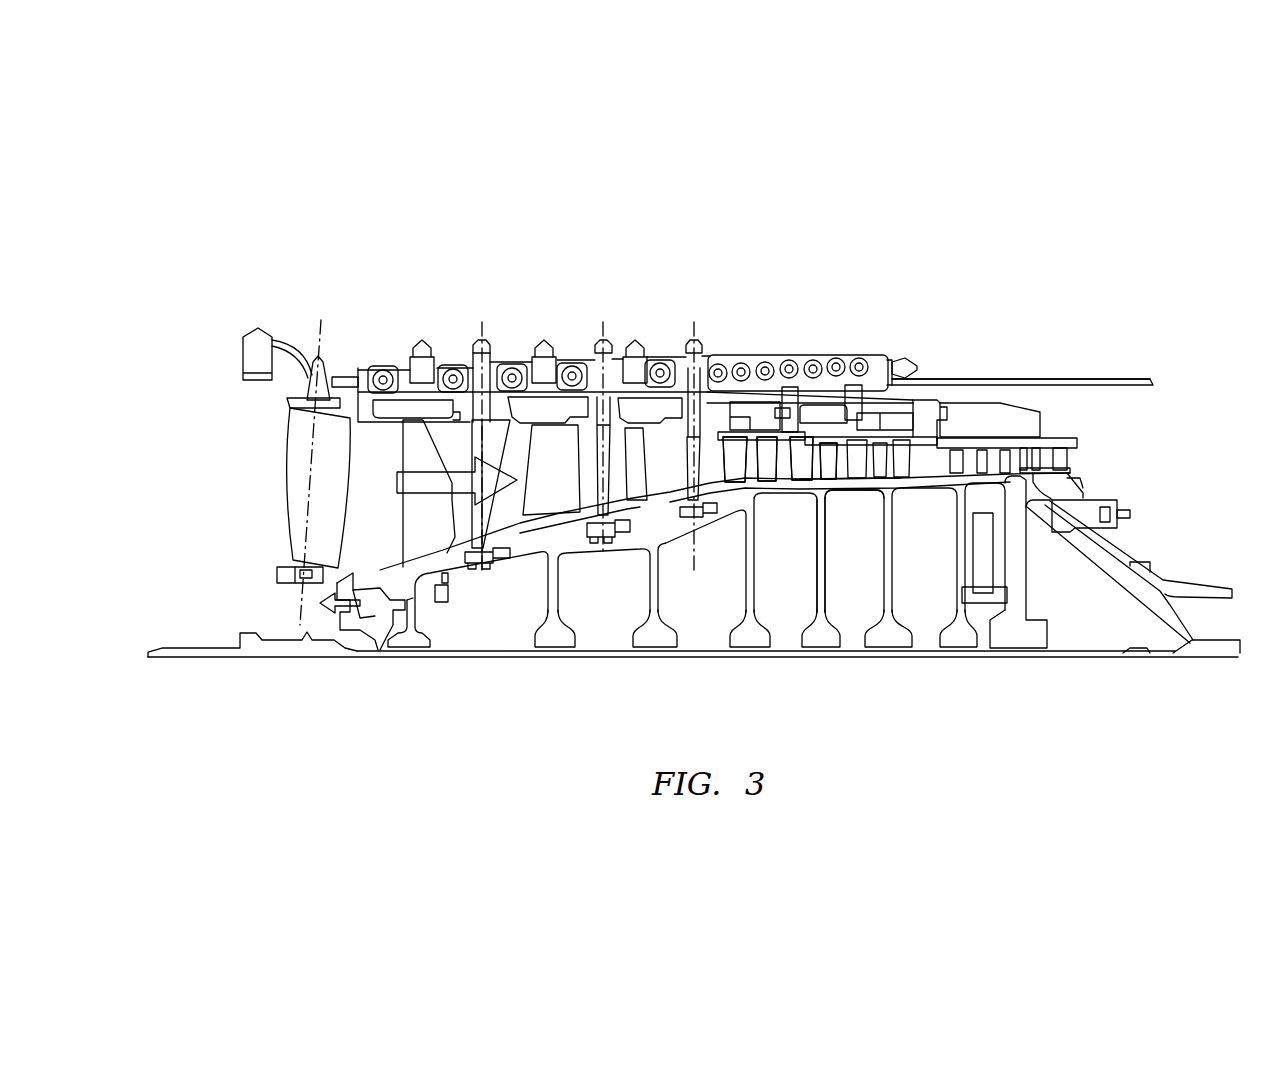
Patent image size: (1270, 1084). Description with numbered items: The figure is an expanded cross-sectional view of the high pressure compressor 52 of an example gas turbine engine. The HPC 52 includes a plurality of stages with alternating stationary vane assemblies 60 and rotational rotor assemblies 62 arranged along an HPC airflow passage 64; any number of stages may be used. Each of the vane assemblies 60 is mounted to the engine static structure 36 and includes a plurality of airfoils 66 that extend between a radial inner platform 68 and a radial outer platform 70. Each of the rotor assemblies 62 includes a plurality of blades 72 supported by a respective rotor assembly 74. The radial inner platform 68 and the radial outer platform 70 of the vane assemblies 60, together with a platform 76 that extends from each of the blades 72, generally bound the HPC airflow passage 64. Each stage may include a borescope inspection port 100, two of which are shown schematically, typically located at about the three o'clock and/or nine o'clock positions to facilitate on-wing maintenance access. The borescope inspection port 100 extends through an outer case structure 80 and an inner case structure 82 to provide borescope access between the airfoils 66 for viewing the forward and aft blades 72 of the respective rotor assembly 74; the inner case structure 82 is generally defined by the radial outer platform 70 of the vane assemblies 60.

The engine static structure 36 is at (1027, 365).
The high pressure compressor 52 is at (959, 263).
The stationary vane assembly 60 is at (765, 464).
The rotational rotor assembly 62 is at (826, 480).
The HPC airflow passage 64 is at (459, 437).
The airfoil 66 is at (772, 455).
The radial inner platform 68 is at (805, 485).
The radial outer platform 70 is at (787, 408).
The blade 72 is at (850, 468).
The rotor assembly 74 is at (825, 607).
The platform 76 is at (820, 483).
The outer case structure 80 is at (985, 378).
The inner case structure 82 is at (915, 430).
The borescope inspection port 100 is at (836, 365).